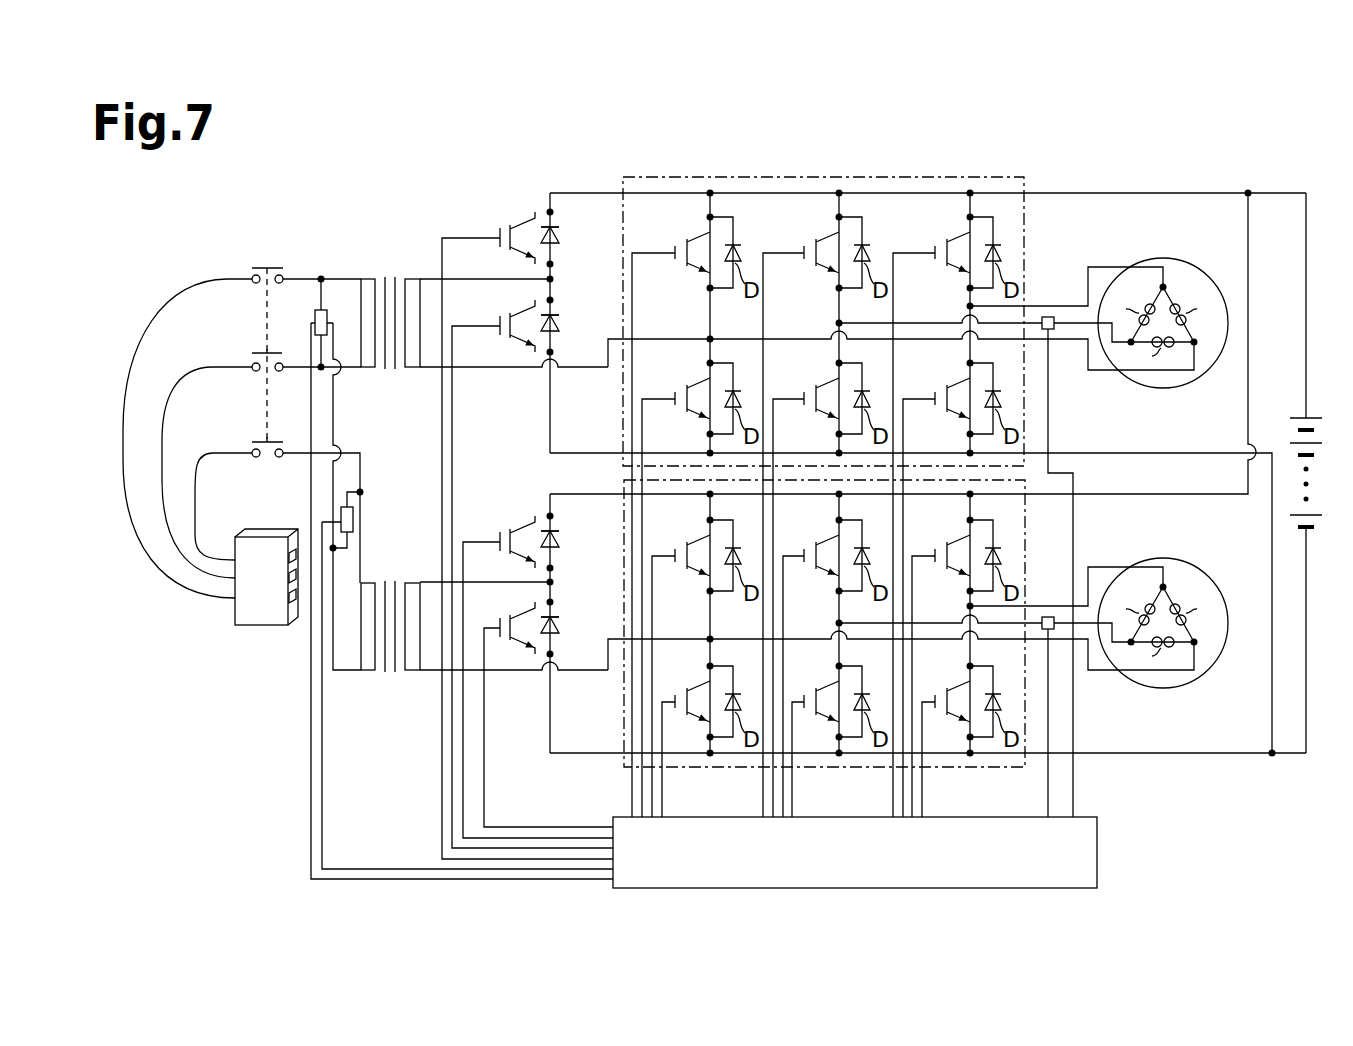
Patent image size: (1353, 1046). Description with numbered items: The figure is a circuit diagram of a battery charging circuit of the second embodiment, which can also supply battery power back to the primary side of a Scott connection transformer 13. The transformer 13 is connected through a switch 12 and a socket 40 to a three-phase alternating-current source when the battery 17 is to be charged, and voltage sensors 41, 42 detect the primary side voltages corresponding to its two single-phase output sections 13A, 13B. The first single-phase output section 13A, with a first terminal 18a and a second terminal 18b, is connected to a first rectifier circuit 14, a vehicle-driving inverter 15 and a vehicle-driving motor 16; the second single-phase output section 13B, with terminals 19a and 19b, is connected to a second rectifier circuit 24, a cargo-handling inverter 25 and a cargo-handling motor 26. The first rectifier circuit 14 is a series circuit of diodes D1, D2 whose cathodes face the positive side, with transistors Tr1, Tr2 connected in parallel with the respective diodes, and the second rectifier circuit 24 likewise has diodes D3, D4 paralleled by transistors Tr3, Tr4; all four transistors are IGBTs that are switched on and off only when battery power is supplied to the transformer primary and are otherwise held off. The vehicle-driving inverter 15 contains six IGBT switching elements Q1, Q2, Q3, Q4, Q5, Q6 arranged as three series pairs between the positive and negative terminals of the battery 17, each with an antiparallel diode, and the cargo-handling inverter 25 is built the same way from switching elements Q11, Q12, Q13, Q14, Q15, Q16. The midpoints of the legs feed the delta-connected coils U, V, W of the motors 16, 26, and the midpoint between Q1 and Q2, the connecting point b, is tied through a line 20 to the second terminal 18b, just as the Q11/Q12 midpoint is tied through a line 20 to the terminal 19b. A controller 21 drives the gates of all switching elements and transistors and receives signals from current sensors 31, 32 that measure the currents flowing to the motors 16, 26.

The switch 12 is at (276, 268).
The Scott connection transformer 13 is at (368, 266).
The first single-phase output section 13A is at (412, 279).
The second single-phase output section 13B is at (412, 583).
The first rectifier circuit 14 is at (548, 191).
The vehicle-driving inverter 15 is at (942, 177).
The vehicle-driving motor 16 is at (1200, 268).
The battery 17 is at (1290, 416).
The first terminal 18a is at (548, 279).
The second terminal 18b is at (500, 370).
The first terminal 19a is at (548, 582).
The second terminal 19b is at (500, 673).
The line 20 is at (588, 370).
The controller 21 is at (1098, 845).
The second rectifier circuit 24 is at (548, 494).
The cargo-handling inverter 25 is at (942, 768).
The cargo-handling motor 26 is at (1200, 568).
The current sensor 31 is at (1048, 316).
The current sensor 32 is at (1048, 616).
The socket 40 is at (258, 625).
The voltage sensor 41 is at (324, 305).
The voltage sensor 42 is at (357, 522).
The transistor Tr1 is at (530, 234).
The transistor Tr2 is at (522, 303).
The transistor Tr3 is at (530, 539).
The transistor Tr4 is at (522, 606).
The diode D1 is at (562, 236).
The diode D2 is at (562, 324).
The diode D3 is at (562, 539).
The diode D4 is at (562, 628).
The first switching element Q1 is at (700, 240).
The second switching element Q2 is at (700, 386).
The third switching element Q3 is at (829, 240).
The fourth switching element Q4 is at (829, 386).
The fifth switching element Q5 is at (960, 240).
The sixth switching element Q6 is at (960, 386).
The first switching element Q11 is at (700, 543).
The second switching element Q12 is at (700, 689).
The third switching element Q13 is at (829, 543).
The fourth switching element Q14 is at (829, 689).
The fifth switching element Q15 is at (960, 543).
The sixth switching element Q16 is at (960, 689).
The connecting point b is at (708, 338).